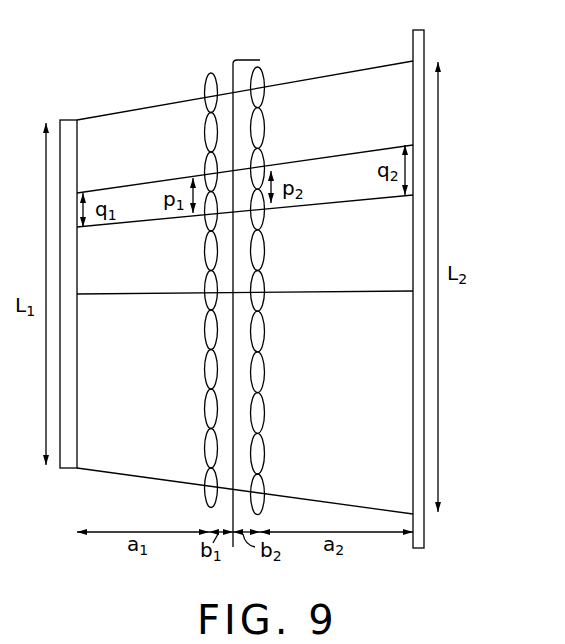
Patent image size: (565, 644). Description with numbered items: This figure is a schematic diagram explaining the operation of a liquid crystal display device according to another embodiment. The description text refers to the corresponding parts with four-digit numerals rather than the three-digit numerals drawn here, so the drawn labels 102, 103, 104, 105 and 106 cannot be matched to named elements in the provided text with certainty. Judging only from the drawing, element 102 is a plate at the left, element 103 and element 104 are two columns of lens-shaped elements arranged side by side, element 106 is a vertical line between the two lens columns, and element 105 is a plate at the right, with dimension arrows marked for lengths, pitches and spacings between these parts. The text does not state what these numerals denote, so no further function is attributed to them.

The object plane 102 is at (72, 118).
The first lens array 103 is at (206, 73).
The second lens array 104 is at (263, 110).
The image plane 105 is at (425, 48).
The intermediate imaging plane 106 is at (260, 60).